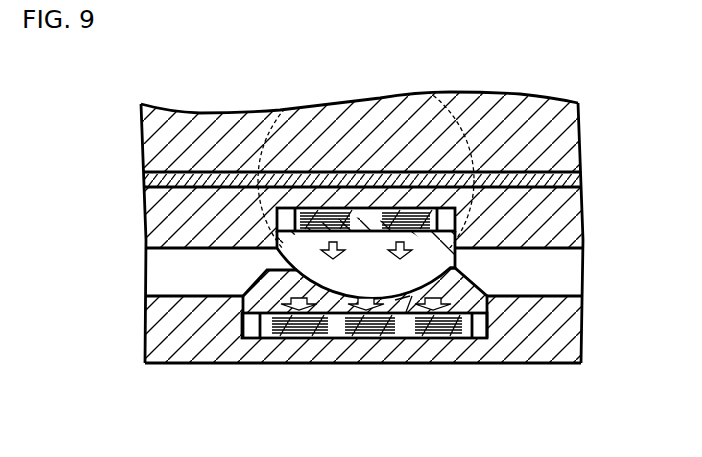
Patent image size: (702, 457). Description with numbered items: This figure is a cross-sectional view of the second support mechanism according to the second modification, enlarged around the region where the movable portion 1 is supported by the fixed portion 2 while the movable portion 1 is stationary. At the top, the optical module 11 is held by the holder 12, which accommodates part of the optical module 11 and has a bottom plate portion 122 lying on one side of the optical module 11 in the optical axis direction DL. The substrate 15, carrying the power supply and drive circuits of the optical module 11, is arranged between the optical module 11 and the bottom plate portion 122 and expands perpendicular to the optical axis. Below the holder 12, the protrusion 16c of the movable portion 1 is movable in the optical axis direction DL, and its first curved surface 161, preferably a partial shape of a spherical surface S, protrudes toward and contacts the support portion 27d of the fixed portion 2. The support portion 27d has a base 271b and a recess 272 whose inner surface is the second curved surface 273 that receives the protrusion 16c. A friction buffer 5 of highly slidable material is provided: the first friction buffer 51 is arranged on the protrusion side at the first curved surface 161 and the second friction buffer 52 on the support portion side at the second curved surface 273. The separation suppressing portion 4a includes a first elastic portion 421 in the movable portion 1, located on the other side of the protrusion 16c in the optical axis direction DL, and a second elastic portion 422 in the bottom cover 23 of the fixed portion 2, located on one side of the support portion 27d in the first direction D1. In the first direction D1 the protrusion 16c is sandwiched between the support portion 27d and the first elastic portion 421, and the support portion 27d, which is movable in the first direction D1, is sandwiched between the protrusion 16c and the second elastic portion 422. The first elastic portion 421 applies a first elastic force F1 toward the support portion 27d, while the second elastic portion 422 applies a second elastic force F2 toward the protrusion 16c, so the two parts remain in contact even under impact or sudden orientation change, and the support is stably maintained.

The movable portion 1 is at (201, 113).
The fixed portion 2 is at (183, 366).
The optical module 11 is at (150, 143).
The substrate 15 is at (147, 178).
The holder 12 is at (575, 217).
The bottom plate portion 122 is at (150, 212).
The protrusion 16c is at (277, 247).
The first curved surface 161 is at (282, 258).
The support portion 27d is at (254, 279).
The bottom cover 23 is at (162, 330).
The separation suppressing portion 4a is at (381, 332).
The first elastic portion 421 is at (500, 246).
The second elastic portion 422 is at (446, 376).
The friction buffer 5 is at (356, 386).
The first friction buffer 51 is at (326, 339).
The second friction buffer 52 is at (267, 339).
The second curved surface 273 is at (397, 300).
The recess 272 is at (410, 308).
The base 271b is at (463, 339).
The spherical surface S is at (462, 97).
The first elastic force F1 is at (447, 263).
The second elastic force F2 is at (442, 297).
The optical axis direction DL is at (627, 138).
The first direction D1 is at (633, 423).